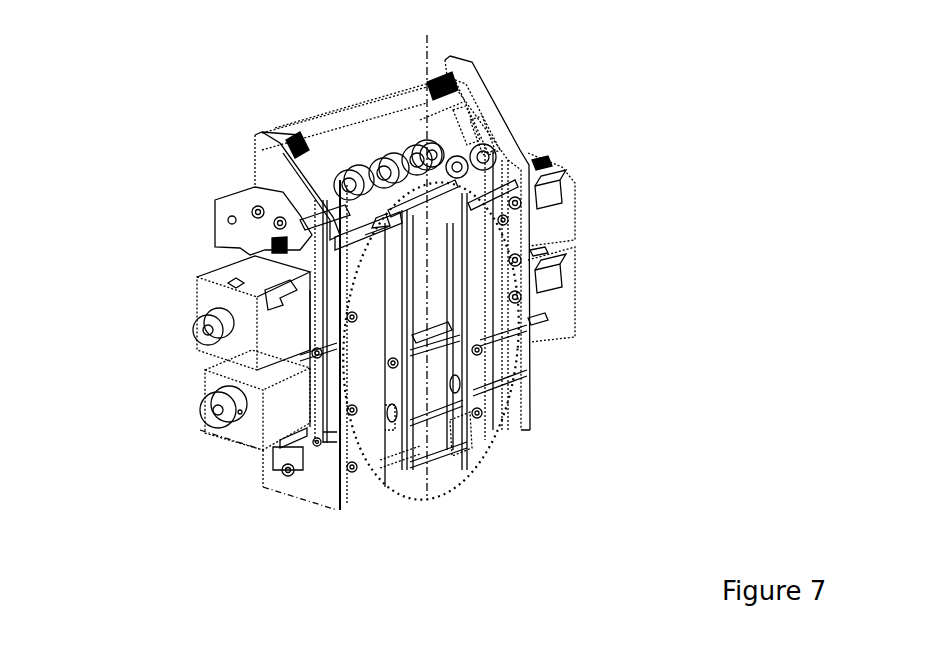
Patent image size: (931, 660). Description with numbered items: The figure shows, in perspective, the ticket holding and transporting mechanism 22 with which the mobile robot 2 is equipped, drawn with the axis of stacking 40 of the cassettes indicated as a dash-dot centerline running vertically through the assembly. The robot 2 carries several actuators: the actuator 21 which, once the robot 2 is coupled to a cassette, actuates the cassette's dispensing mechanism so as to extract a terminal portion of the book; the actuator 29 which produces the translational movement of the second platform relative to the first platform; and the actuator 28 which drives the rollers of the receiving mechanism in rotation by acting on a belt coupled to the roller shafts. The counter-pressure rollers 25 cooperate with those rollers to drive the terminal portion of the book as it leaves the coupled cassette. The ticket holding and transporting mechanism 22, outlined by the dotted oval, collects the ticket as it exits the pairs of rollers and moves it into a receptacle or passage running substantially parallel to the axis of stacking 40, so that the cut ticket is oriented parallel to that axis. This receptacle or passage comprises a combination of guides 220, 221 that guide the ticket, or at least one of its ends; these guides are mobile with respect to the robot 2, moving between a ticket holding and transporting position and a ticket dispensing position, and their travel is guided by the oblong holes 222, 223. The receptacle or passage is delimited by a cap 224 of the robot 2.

The robot 2 is at (135, 88).
The axis of stacking 40 is at (427, 44).
The counter-pressure rollers 25 is at (437, 150).
The actuator 28 is at (568, 205).
The actuator 21 is at (213, 293).
The actuator 29 is at (237, 432).
The ticket holding and transporting mechanism 22 is at (497, 432).
The oblong hole 222 is at (380, 220).
The cap 224 is at (422, 318).
The guide 221 is at (457, 432).
The guide 220 is at (393, 447).
The oblong hole 223 is at (390, 420).